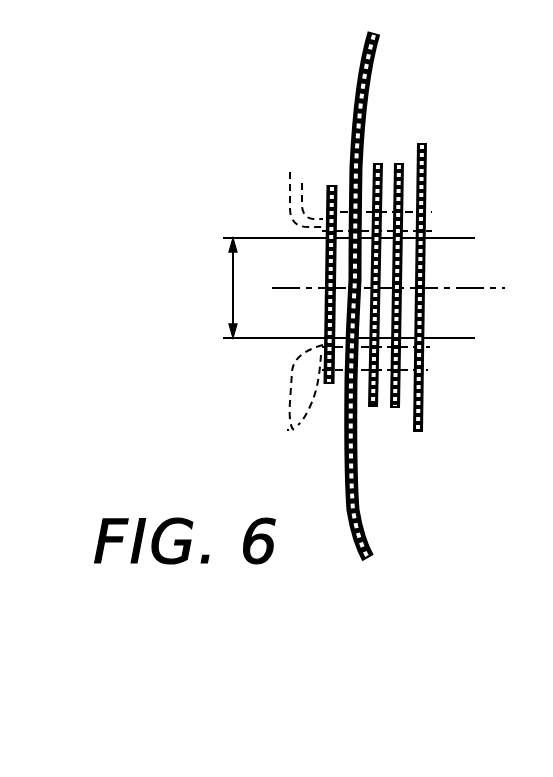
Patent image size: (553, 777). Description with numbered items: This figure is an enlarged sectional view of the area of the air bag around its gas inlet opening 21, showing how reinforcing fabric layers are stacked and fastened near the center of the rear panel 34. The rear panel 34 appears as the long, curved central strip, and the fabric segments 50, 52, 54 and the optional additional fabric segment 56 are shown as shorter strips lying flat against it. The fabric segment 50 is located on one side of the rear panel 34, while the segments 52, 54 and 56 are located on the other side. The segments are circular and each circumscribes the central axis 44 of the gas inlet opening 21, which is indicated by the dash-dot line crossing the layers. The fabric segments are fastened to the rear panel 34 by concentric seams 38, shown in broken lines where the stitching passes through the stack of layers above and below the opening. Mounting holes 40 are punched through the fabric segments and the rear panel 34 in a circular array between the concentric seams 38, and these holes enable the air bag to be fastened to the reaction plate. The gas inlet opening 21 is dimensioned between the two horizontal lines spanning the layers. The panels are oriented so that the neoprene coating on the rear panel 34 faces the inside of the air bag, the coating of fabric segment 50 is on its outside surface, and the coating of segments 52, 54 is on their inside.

The gas inlet opening 21 is at (230, 285).
The rear panel 34 is at (362, 55).
The concentric seams 38 is at (293, 172).
The mounting holes 40 is at (424, 358).
The central axis 44 is at (484, 290).
The fabric segment 50 is at (327, 188).
The fabric segment 52 is at (377, 162).
The fabric segment 54 is at (399, 162).
The additional fabric segment 56 is at (428, 164).